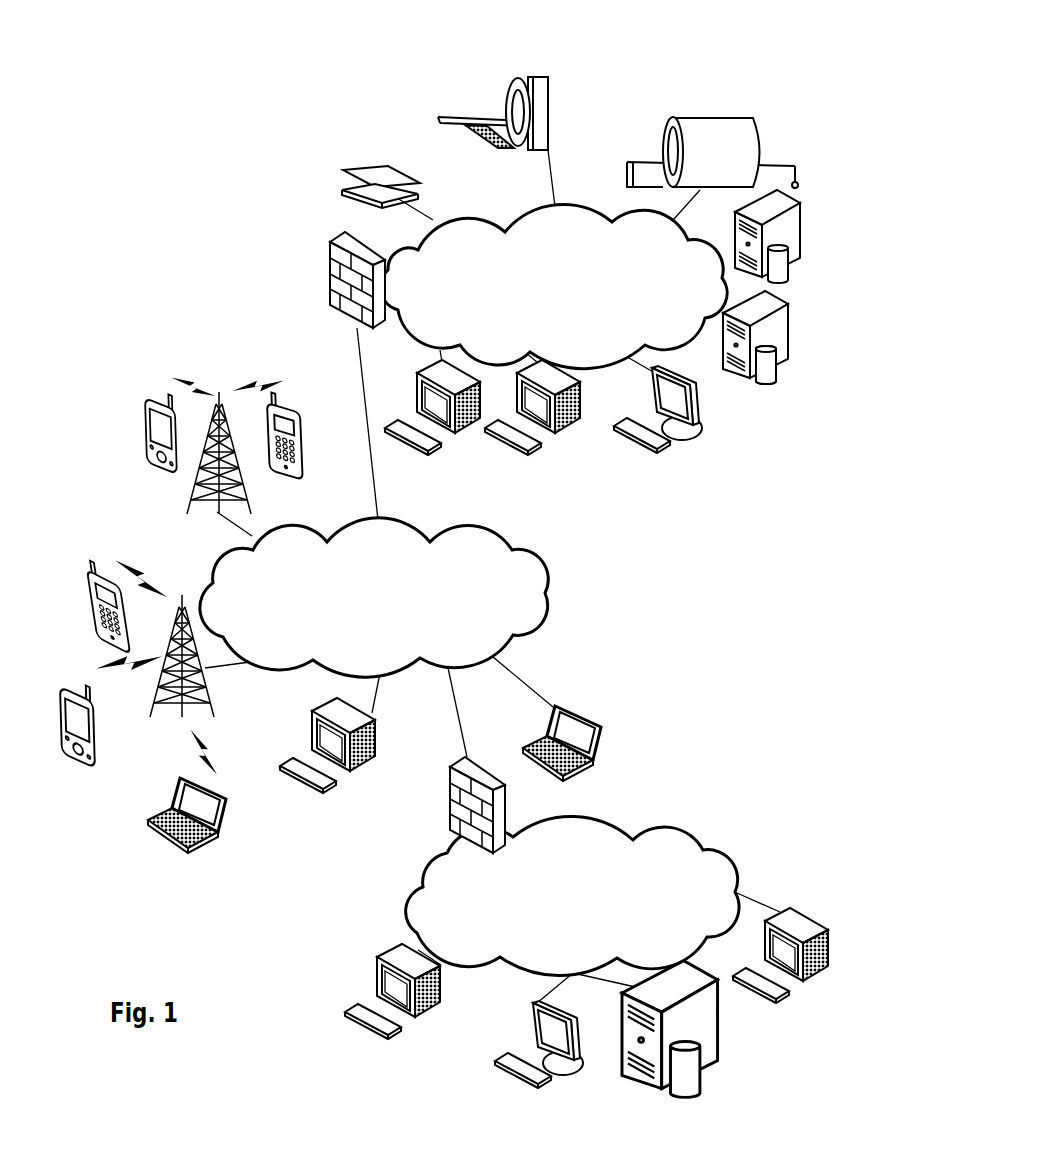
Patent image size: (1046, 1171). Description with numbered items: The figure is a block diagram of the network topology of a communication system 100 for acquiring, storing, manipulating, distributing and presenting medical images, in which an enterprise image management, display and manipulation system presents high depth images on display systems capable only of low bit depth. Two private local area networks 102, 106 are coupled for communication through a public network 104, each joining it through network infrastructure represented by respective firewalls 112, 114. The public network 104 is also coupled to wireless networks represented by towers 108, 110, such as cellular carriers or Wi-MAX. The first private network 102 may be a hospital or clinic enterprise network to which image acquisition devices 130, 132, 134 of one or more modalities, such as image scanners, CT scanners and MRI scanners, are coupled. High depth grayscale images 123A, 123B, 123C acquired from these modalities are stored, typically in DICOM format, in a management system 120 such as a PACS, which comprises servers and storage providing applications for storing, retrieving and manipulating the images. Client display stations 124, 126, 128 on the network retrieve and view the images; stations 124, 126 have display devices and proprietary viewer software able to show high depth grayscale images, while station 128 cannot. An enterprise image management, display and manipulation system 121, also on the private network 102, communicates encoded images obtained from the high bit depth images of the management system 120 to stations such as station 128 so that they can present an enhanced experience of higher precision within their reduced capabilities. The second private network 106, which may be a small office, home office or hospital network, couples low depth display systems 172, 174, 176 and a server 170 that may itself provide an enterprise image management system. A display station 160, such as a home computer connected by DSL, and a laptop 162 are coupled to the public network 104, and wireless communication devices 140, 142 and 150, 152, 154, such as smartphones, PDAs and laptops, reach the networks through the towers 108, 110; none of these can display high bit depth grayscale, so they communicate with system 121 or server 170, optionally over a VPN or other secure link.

The communication system 100 is at (716, 592).
The private network 102 is at (452, 319).
The public network 104 is at (402, 646).
The private network 106 is at (614, 940).
The tower 108 is at (205, 512).
The tower 110 is at (163, 713).
The firewall 112 is at (330, 243).
The firewall 114 is at (508, 808).
The management system 120 is at (755, 377).
The enterprise image management, display and manipulation system 121 is at (788, 275).
The image 123A is at (778, 354).
The image 123B is at (778, 364).
The image 123C is at (778, 380).
The client display station 124 is at (455, 435).
The client display station 126 is at (555, 435).
The client display station 128 is at (690, 442).
The image acquisition device 130 is at (375, 166).
The image acquisition device 132 is at (548, 73).
The image acquisition device 134 is at (753, 118).
The wireless communication device 140 is at (304, 462).
The wireless communication device 142 is at (150, 398).
The wireless communication device 150 is at (88, 573).
The wireless communication device 152 is at (63, 688).
The wireless communication device 154 is at (237, 797).
The display station 160 is at (347, 770).
The laptop computer 162 is at (600, 728).
The server 170 is at (703, 1068).
The client display station 172 is at (802, 978).
The client display station 174 is at (415, 1015).
The client display station 176 is at (570, 1080).